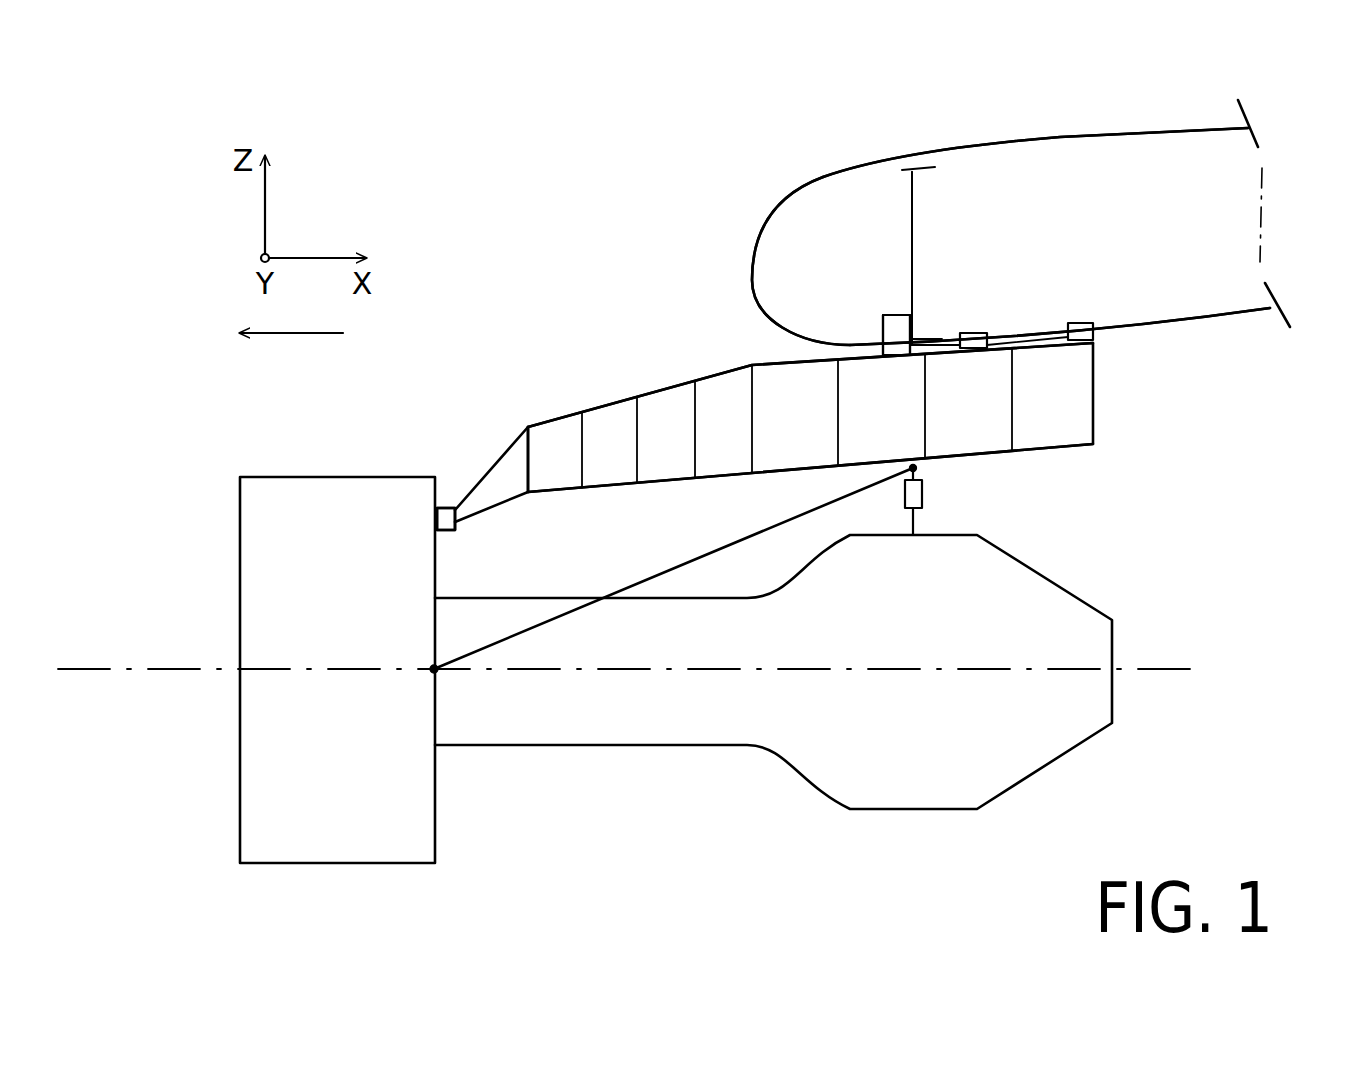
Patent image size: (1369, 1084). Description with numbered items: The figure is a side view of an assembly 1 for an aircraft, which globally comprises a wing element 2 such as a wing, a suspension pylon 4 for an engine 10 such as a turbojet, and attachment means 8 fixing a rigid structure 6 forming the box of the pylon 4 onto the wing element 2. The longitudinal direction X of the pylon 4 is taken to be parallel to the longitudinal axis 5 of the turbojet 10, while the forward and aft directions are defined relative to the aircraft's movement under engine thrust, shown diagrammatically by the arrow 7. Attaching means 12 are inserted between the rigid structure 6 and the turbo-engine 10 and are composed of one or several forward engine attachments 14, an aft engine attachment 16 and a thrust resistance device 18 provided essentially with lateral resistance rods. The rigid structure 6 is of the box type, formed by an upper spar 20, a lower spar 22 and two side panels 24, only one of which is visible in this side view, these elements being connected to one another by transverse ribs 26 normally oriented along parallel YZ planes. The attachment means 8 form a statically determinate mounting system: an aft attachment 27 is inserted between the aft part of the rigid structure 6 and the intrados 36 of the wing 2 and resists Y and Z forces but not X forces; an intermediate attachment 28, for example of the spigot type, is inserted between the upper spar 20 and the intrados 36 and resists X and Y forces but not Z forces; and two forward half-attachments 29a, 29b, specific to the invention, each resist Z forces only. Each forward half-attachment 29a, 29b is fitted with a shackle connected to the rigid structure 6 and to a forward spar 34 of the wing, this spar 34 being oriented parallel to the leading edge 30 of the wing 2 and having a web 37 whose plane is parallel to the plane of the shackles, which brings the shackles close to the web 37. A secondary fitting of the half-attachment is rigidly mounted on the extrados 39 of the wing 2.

The assembly 1 is at (550, 258).
The wing element 2 is at (1054, 217).
The suspension pylon 4 is at (774, 385).
The longitudinal axis 5 is at (90, 668).
The rigid structure 6 is at (774, 431).
The arrow 7 is at (285, 338).
The attachment means 8 is at (1094, 388).
The engine 10 is at (412, 872).
The attaching means 12 is at (676, 691).
The forward engine attachment 14 is at (455, 530).
The aft engine attachment 16 is at (907, 493).
The thrust resistance device 18 is at (688, 563).
The upper spar 20 is at (773, 360).
The lower spar 22 is at (785, 486).
The side panel 24 is at (552, 450).
The transverse ribs 26 is at (582, 433).
The aft attachment 27 is at (1085, 340).
The intermediate attachment 28 is at (977, 348).
The forward half-attachment 29a is at (897, 352).
The forward half-attachment 29b is at (1153, 437).
The leading edge 30 is at (840, 185).
The forward spar 34 is at (918, 275).
The intrados 36 is at (1262, 312).
The web 37 is at (911, 212).
The extrados 39 is at (988, 145).